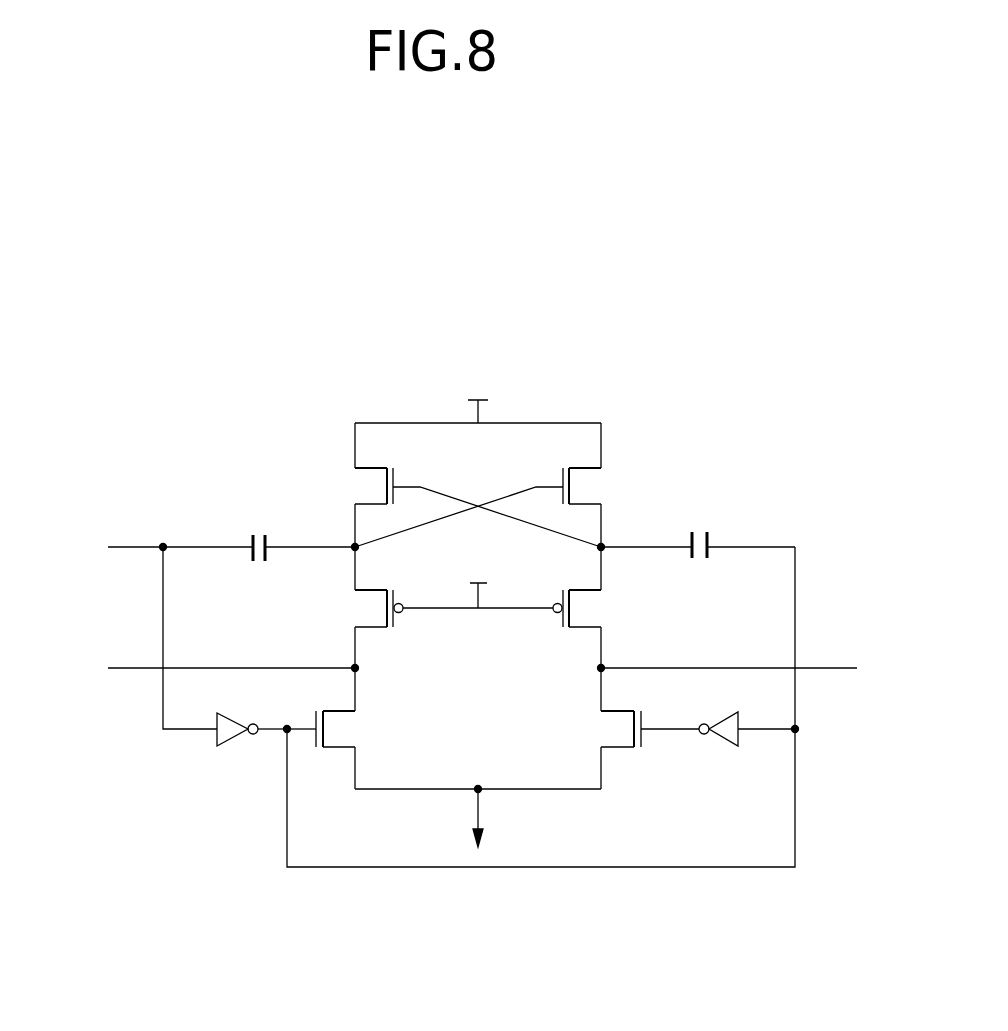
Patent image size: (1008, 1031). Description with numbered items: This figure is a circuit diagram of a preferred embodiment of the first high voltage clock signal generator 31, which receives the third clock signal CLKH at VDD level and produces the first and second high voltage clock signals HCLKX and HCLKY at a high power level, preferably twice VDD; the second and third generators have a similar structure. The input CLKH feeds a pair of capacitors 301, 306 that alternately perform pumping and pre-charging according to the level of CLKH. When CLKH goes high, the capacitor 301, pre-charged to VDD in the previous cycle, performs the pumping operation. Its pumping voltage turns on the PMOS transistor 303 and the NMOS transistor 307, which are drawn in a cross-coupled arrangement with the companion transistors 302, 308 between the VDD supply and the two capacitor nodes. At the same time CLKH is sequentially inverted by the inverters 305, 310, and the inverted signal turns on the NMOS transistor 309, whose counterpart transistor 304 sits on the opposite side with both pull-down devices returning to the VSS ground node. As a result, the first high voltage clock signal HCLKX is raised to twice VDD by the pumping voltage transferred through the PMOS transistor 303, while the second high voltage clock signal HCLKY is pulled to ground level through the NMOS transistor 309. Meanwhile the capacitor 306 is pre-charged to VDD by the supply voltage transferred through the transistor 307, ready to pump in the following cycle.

The first high voltage clock signal generator 31 is at (738, 398).
The capacitor 301 is at (250, 540).
The first NMOS cross-coupled transistor 302 is at (457, 507).
The PMOS transistor 303 is at (395, 629).
The first pull-down NMOS transistor 304 is at (342, 750).
The inverter 305 is at (236, 745).
The capacitor 306 is at (710, 535).
The NMOS transistor 307 is at (501, 507).
The second PMOS transistor 308 is at (562, 629).
The NMOS transistor 309 is at (630, 750).
The inverter 310 is at (723, 746).